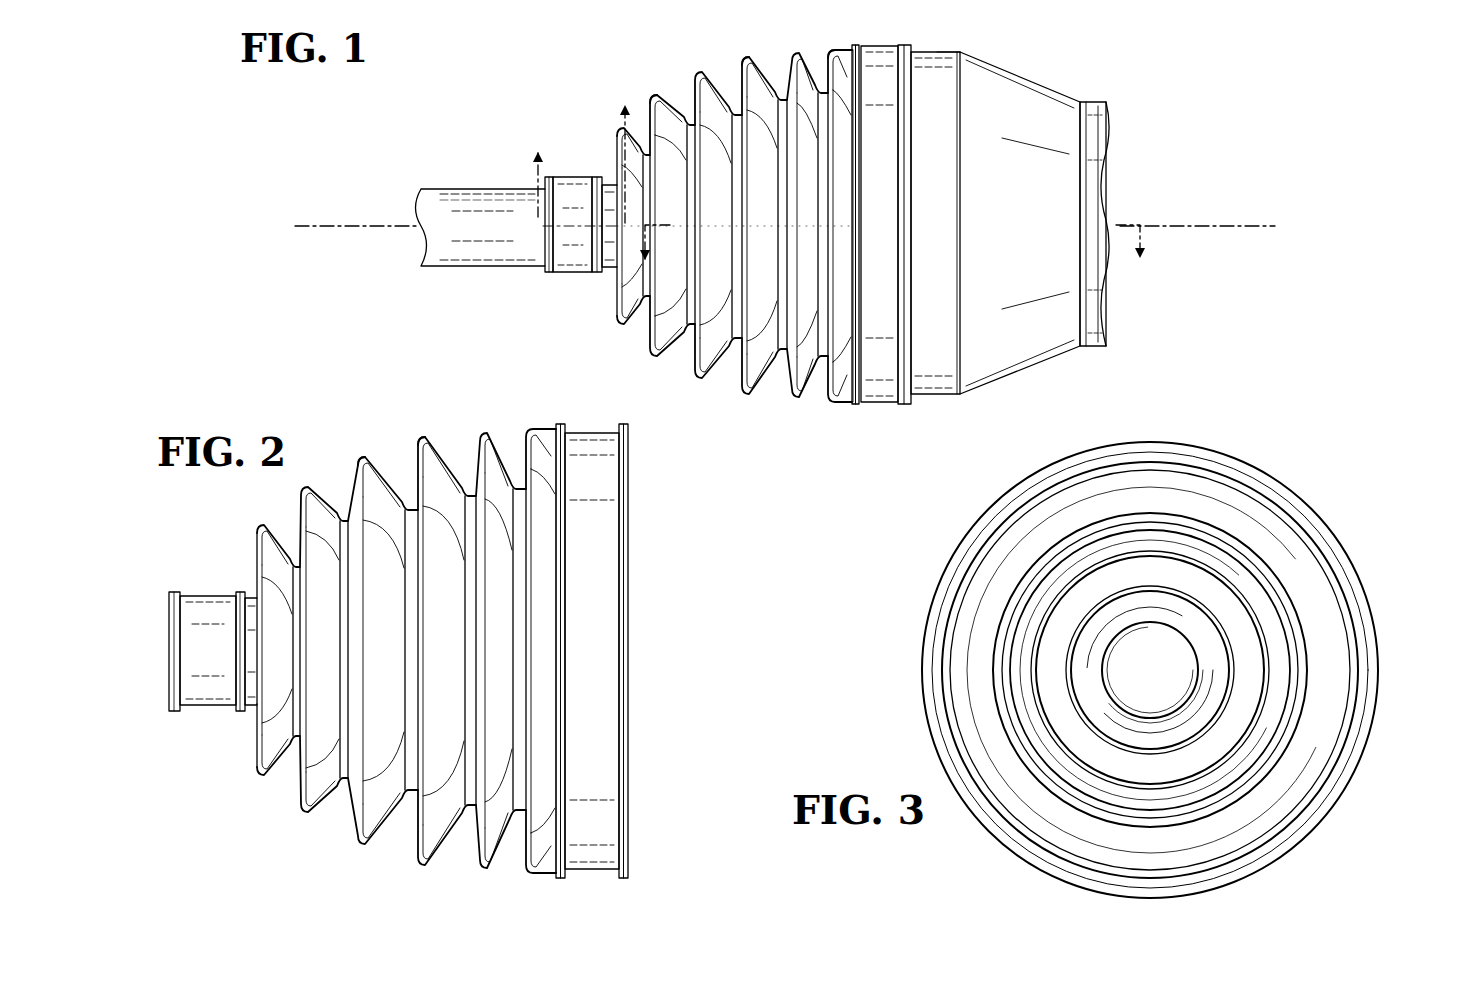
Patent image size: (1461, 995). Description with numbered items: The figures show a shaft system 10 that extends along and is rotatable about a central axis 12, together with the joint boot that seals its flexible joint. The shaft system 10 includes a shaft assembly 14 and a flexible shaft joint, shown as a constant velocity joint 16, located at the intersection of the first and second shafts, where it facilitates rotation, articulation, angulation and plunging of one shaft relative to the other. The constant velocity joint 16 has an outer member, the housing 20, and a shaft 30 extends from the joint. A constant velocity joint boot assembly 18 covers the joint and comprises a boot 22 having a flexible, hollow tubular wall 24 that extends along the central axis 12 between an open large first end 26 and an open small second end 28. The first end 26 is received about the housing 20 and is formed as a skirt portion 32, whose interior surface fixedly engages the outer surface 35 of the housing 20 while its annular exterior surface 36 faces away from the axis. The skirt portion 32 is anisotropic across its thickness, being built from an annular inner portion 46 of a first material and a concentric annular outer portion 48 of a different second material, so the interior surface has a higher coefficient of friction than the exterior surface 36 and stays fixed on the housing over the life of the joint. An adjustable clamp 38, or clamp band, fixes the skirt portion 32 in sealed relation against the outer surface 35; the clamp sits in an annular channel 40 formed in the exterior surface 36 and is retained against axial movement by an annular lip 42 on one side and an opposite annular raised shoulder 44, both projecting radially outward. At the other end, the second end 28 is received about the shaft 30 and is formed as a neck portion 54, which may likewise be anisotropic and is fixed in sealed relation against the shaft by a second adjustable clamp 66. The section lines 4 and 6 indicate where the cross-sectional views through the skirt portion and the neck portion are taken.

In FIG. 1, the section line 4- 4 is at (893, 242).
In FIG. 1, the section line 6- 6 is at (580, 151).
In FIG. 1, the shaft system 10 is at (535, 97).
In FIG. 1, the central axis 12 is at (368, 227).
In FIG. 1, the shaft assembly 14 is at (475, 282).
In FIG. 1, the constant velocity joint 16 is at (1021, 197).
In FIG. 1, the constant velocity joint boot assembly 18 is at (818, 58).
In FIG. 1, the housing 20 is at (982, 60).
In FIG. 1, the boot 22 is at (747, 52).
In FIG. 2, the boot 22 is at (433, 437).
In FIG. 3, the boot 22 is at (1352, 560).
In FIG. 1, the tubular wall 24 is at (663, 95).
In FIG. 2, the tubular wall 24 is at (362, 458).
In FIG. 3, the tubular wall 24 is at (1178, 501).
In FIG. 1, the first end 26 is at (912, 390).
In FIG. 2, the first end 26 is at (630, 429).
In FIG. 3, the first end 26 is at (1295, 497).
In FIG. 1, the second end 28 is at (544, 271).
In FIG. 2, the second end 28 is at (170, 597).
In FIG. 3, the second end 28 is at (1121, 631).
In FIG. 1, the shaft 30 is at (460, 213).
In FIG. 1, the skirt portion 32 is at (880, 233).
In FIG. 2, the skirt portion 32 is at (586, 639).
In FIG. 3, the skirt portion 32 is at (1375, 621).
In FIG. 1, the outer surface 35 is at (937, 47).
In FIG. 1, the exterior surface 36 is at (845, 45).
In FIG. 2, the exterior surface 36 is at (550, 422).
In FIG. 1, the adjustable clamp 38 is at (880, 403).
In FIG. 2, the annular channel 40 is at (591, 432).
In FIG. 1, the annular lip 42 is at (904, 405).
In FIG. 2, the annular lip 42 is at (624, 424).
In FIG. 1, the annular raised shoulder 44 is at (856, 405).
In FIG. 2, the annular raised shoulder 44 is at (557, 424).
In FIG. 3, the annular inner portion 46 is at (1280, 824).
In FIG. 3, the annular outer portion 48 is at (1341, 776).
In FIG. 1, the neck portion 54 is at (603, 167).
In FIG. 1, the adjustable clamp 66 is at (577, 264).